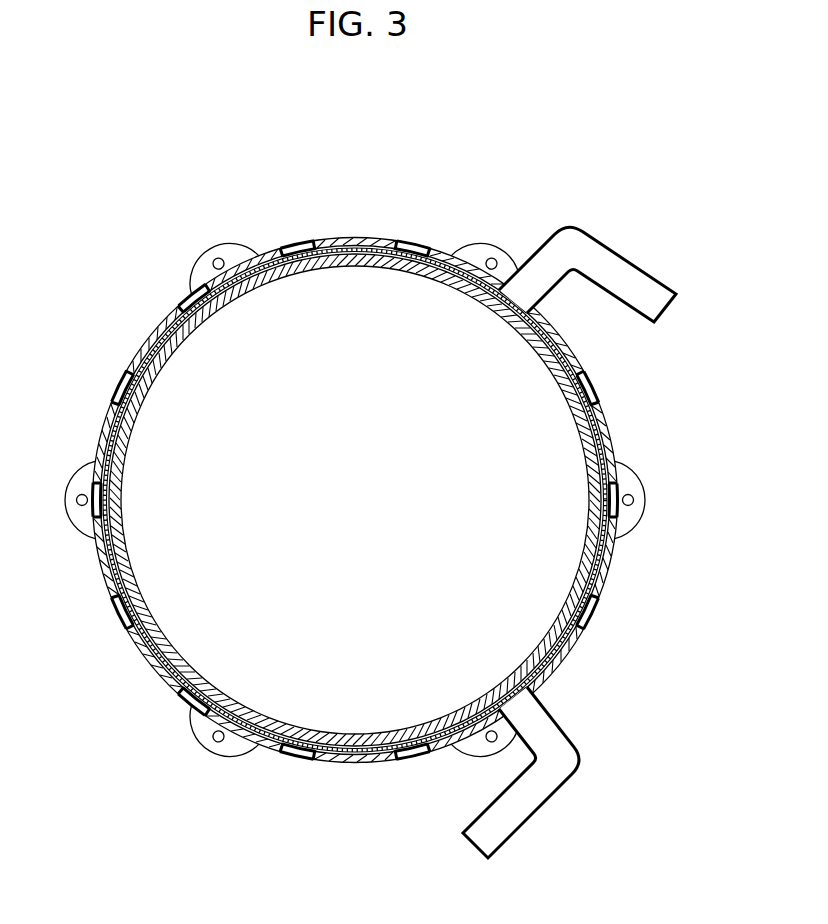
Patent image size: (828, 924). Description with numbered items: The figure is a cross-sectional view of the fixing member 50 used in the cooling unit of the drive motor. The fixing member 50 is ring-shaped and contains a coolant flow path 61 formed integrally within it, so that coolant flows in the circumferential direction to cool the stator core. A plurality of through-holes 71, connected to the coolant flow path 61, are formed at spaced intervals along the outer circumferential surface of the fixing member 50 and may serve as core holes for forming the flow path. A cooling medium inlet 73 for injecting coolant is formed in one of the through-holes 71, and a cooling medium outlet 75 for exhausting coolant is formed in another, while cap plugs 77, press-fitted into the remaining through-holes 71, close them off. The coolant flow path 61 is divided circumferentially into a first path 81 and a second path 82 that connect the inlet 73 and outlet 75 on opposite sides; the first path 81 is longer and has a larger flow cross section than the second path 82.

The fixing member 50 is at (372, 153).
The coolant flow path 61 is at (485, 490).
The through-holes 71 is at (135, 360).
The cooling medium inlet 73 is at (641, 269).
The cooling medium outlet 75 is at (523, 821).
The cap plugs 77 is at (117, 393).
The first path 81 is at (473, 700).
The second path 82 is at (593, 473).